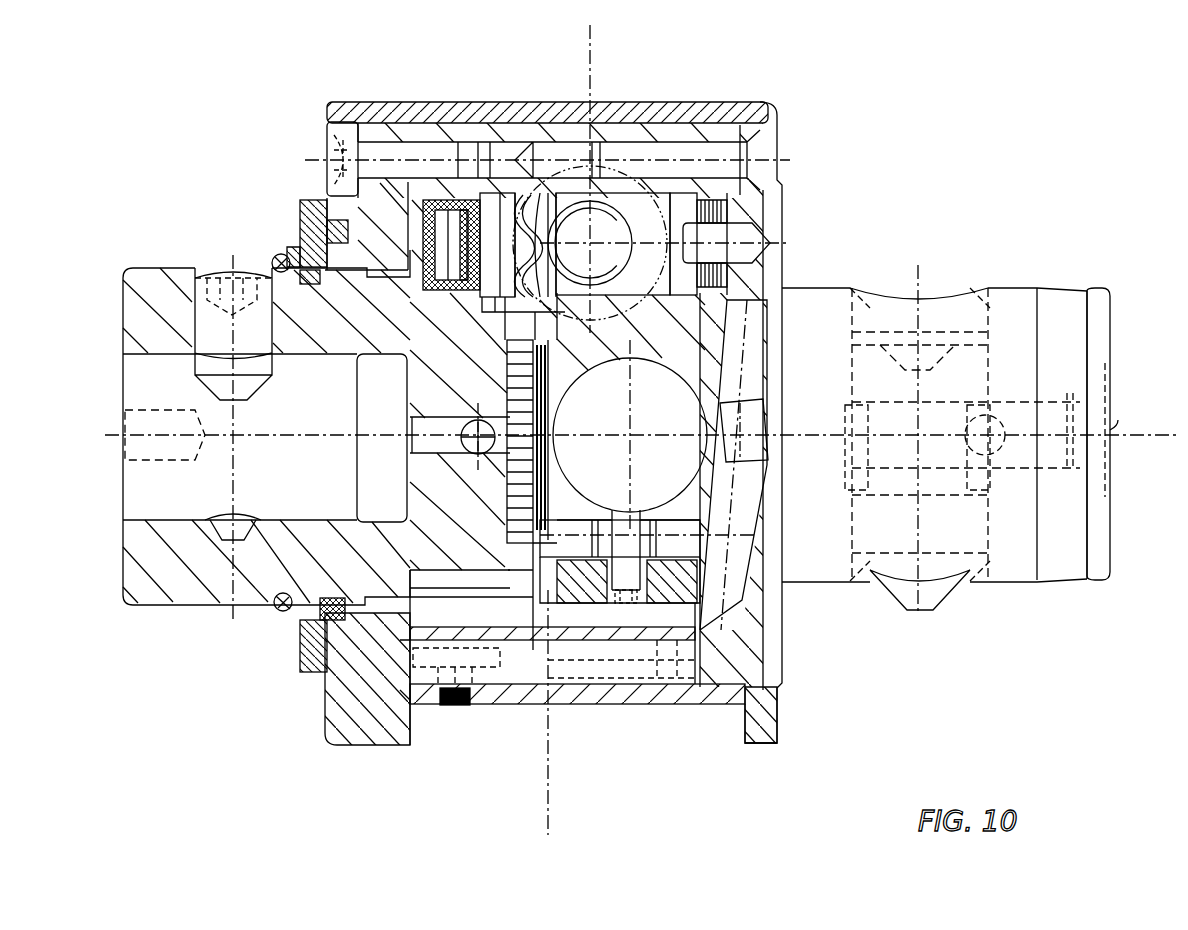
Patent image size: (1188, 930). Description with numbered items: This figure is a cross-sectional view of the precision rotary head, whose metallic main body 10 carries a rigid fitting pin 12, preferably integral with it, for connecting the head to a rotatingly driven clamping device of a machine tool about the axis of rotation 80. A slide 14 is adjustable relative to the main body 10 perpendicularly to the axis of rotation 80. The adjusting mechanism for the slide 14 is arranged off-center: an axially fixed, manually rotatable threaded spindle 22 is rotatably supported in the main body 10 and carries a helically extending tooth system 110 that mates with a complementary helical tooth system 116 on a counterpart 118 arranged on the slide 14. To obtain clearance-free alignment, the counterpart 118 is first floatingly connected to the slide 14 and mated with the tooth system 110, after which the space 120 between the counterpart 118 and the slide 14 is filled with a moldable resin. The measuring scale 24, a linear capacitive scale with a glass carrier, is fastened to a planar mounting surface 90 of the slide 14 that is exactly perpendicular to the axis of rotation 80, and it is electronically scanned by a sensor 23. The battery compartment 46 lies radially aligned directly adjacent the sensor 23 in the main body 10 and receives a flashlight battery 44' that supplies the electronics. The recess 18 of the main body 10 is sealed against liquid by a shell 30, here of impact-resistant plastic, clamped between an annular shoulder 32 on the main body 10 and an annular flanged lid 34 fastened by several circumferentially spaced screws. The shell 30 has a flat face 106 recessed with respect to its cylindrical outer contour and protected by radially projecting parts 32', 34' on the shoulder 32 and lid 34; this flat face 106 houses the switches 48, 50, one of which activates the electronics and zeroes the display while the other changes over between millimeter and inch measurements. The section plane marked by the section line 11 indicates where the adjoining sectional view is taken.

The main body 10 is at (723, 347).
The section line 11 is at (591, 32).
The fitting pin 12 is at (1010, 305).
The slide 14 is at (533, 545).
The recess 18 is at (667, 617).
The threaded spindle 22 is at (607, 227).
The sensor 23 is at (540, 427).
The measuring scale 24 is at (489, 227).
The shell 30 is at (703, 112).
The annular shoulder 32 is at (798, 715).
The radially projecting part 32' is at (792, 758).
The annular flanged lid 34 is at (504, 443).
The radially projecting part 34' is at (413, 733).
The flashlight battery 44' is at (791, 465).
The battery compartment 46 is at (723, 397).
The switch 48 is at (477, 740).
The switch 50 is at (458, 707).
The axis of rotation 80 is at (1118, 420).
The planar mounting surface 90 is at (478, 515).
The flat face 106 is at (728, 707).
The helical tooth system 110 is at (550, 250).
The helical tooth system 116 is at (520, 245).
The counterpart 118 is at (450, 195).
The space 120 is at (420, 221).